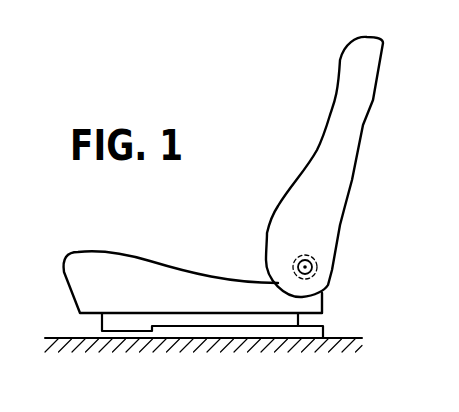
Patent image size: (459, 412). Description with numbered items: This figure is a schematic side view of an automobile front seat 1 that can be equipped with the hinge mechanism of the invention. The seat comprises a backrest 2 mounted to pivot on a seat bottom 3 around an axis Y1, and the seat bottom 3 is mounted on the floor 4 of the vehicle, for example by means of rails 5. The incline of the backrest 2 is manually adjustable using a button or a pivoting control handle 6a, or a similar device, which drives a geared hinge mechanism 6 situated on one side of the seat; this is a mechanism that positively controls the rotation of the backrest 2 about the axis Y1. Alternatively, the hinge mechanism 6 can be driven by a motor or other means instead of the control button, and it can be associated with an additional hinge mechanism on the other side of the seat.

The front seat 1 is at (247, 123).
The backrest 2 is at (362, 87).
The seat bottom 3 is at (120, 265).
The floor 4 is at (63, 337).
The rails 5 is at (212, 325).
The geared hinge mechanism 6 is at (292, 263).
The pivoting control handle 6a is at (309, 271).
The axis Y1 is at (305, 267).